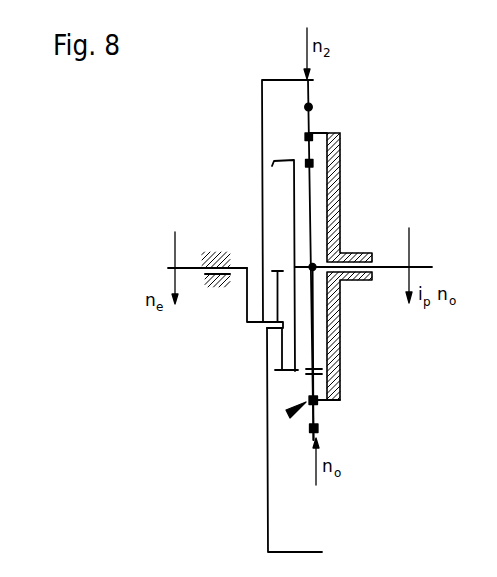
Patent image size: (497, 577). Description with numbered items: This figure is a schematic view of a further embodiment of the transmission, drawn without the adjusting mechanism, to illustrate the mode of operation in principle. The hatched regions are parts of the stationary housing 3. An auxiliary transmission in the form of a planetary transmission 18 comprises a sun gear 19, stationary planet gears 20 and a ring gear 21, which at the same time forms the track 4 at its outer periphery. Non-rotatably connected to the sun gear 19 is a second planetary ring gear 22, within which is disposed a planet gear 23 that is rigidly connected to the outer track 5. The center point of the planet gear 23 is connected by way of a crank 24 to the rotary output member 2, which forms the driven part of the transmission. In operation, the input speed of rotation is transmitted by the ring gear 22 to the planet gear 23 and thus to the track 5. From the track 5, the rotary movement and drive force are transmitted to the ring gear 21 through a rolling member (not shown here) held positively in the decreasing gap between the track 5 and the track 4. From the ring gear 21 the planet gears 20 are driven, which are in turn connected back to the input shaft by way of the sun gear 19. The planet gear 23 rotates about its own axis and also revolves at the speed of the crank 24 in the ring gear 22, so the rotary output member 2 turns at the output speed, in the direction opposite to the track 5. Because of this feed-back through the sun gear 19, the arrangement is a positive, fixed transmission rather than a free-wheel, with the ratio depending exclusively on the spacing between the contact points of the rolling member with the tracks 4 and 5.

The rotary output member 2 is at (200, 266).
The housing 3 is at (335, 305).
The track 4 is at (309, 106).
The outer track 5 is at (317, 550).
The planetary transmission 18 is at (296, 410).
The sun gear 19 is at (314, 326).
The planet gears 20 is at (312, 113).
The ring gear 21 is at (311, 108).
The second planetary ring gear 22 is at (270, 165).
The planet gear 23 is at (281, 348).
The crank 24 is at (247, 299).